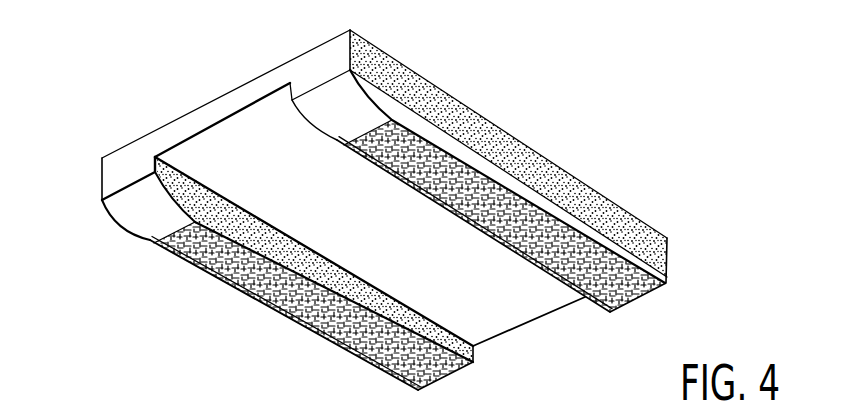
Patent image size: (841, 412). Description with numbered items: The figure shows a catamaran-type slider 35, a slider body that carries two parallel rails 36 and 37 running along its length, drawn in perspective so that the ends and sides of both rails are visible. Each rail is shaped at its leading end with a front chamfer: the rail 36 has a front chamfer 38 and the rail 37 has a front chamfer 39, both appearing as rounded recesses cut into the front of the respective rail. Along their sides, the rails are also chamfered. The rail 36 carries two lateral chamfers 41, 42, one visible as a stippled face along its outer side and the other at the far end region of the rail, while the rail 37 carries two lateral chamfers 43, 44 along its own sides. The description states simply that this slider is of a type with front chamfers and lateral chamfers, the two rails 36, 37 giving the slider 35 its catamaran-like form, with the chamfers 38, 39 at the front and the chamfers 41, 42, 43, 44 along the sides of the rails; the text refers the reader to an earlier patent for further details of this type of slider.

The catamaran-type slider 35 is at (542, 320).
The rail 36 is at (490, 212).
The rail 37 is at (213, 257).
The front chamfer 38 is at (348, 106).
The front chamfer 39 is at (157, 207).
The lateral chamfer 41 is at (603, 247).
The lateral chamfer 42 is at (592, 306).
The lateral chamfer 43 is at (287, 318).
The lateral chamfer 44 is at (372, 315).